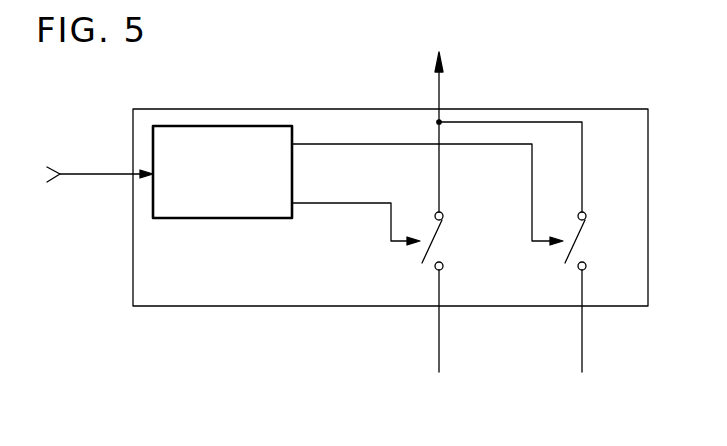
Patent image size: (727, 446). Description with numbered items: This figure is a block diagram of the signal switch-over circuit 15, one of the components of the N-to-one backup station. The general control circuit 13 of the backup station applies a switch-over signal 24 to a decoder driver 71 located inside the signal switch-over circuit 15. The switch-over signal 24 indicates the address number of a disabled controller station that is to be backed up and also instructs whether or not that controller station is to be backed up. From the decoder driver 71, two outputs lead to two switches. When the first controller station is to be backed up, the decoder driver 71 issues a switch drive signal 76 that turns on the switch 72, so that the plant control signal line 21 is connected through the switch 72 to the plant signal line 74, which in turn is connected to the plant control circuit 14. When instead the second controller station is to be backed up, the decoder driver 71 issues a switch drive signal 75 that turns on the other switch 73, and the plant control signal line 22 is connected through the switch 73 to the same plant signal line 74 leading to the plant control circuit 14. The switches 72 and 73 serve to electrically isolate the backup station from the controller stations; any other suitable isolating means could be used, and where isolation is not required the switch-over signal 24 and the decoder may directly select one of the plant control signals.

The general control circuit 13 is at (38, 177).
The plant control circuit 14 is at (445, 74).
The signal switch-over circuit 15 is at (250, 306).
The plant control signal line 21 is at (439, 372).
The plant control signal line 22 is at (582, 372).
The switch-over signal 24 is at (88, 177).
The decoder driver 71 is at (204, 126).
The switch 72 is at (444, 240).
The switch 73 is at (587, 240).
The plant signal line 74 is at (442, 92).
The switch drive signal 75 is at (365, 144).
The switch drive signal 76 is at (347, 203).